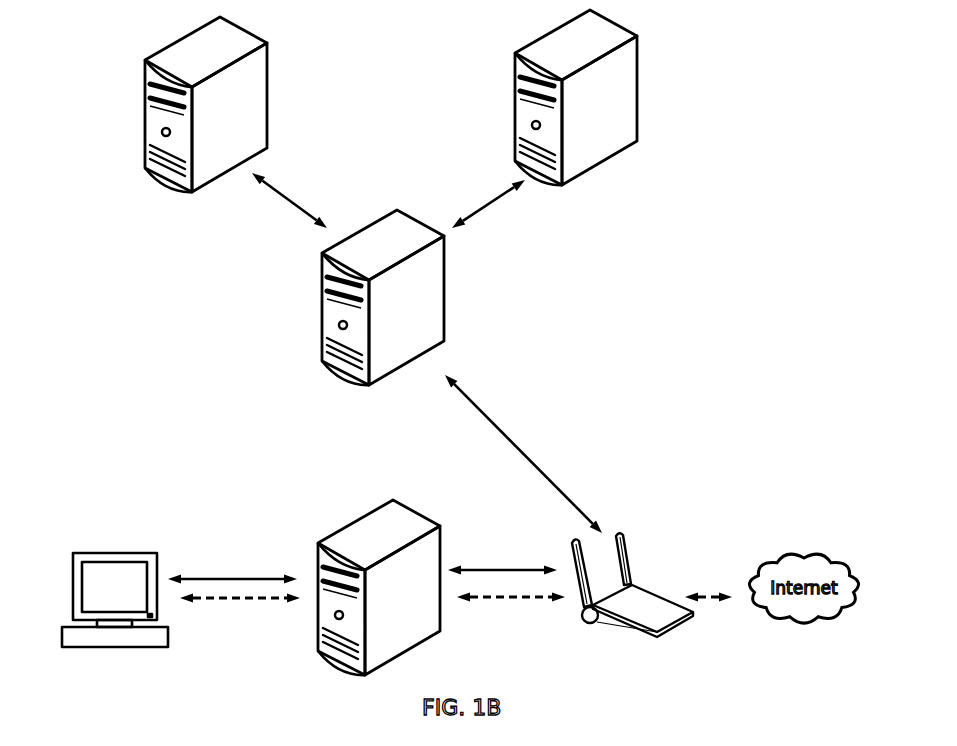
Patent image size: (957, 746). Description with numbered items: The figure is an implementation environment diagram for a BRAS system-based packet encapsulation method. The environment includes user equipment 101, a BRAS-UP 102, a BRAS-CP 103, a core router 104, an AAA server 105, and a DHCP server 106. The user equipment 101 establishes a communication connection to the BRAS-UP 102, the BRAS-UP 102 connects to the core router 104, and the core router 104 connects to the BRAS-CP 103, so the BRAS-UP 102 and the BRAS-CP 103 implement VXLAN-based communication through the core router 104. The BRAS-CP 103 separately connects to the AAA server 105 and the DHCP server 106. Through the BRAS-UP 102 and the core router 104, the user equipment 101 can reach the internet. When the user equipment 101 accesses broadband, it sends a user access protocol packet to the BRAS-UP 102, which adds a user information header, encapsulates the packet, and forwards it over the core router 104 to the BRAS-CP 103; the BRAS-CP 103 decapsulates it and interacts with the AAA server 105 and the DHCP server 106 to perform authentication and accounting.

The user equipment 101 is at (117, 553).
The BRAS-UP 102 is at (393, 503).
The BRAS-CP 103 is at (446, 283).
The core router (CR) 104 is at (655, 597).
The AAA server 105 is at (268, 99).
The DHCP server 106 is at (514, 103).